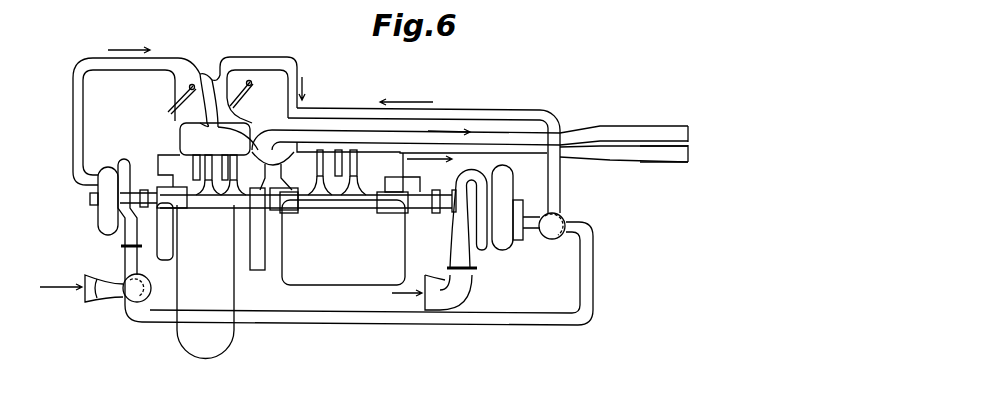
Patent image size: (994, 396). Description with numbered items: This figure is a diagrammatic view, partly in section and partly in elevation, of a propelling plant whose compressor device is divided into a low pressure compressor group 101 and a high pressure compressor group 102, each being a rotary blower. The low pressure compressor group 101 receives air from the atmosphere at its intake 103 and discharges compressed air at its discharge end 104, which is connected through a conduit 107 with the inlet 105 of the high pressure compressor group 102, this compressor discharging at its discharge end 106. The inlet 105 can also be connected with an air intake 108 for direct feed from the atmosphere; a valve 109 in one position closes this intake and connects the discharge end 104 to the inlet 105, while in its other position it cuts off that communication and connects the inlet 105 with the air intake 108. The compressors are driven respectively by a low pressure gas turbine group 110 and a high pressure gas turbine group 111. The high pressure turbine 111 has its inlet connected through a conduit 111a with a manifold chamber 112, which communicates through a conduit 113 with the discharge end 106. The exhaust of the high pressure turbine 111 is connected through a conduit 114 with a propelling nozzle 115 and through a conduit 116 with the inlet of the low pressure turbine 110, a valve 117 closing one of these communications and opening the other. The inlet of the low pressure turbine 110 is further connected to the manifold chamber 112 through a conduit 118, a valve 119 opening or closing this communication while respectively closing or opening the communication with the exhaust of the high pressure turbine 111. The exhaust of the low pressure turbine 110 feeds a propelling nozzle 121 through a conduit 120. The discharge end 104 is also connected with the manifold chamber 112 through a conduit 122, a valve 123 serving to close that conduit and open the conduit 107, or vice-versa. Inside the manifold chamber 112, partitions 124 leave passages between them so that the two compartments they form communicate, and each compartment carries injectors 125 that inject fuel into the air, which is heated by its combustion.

The low pressure compressor group 101 is at (462, 240).
The high pressure compressor group 102 is at (122, 208).
The air intake of low pressure compressor 103 is at (447, 293).
The discharge end of low pressure compressor 104 is at (525, 228).
The inlet of high pressure compressor 105 is at (133, 255).
The discharge end of high pressure compressor 106 is at (92, 196).
The conduit 107 is at (297, 318).
The air intake 108 is at (104, 293).
The valve 109 is at (123, 291).
The low pressure gas turbine group 110 is at (299, 277).
The high pressure gas turbine group 111 is at (247, 258).
The conduit 111a is at (179, 137).
The manifold chamber 112 is at (186, 84).
The conduit 113 is at (78, 117).
The conduit 114 is at (573, 130).
The propelling nozzle 115 is at (662, 130).
The conduit 116 is at (275, 181).
The valve 117 is at (215, 139).
The conduit 118 is at (290, 70).
The valve 119 is at (293, 143).
The conduit 120 is at (573, 151).
The propelling nozzle 121 is at (672, 157).
The conduit 122 is at (508, 109).
The valve 123 is at (580, 233).
The partitions 124 is at (200, 118).
The injectors 125 is at (170, 105).